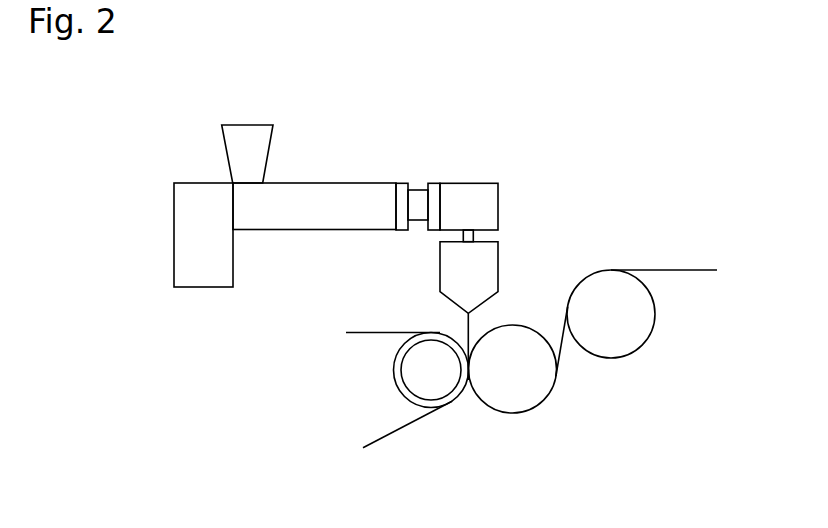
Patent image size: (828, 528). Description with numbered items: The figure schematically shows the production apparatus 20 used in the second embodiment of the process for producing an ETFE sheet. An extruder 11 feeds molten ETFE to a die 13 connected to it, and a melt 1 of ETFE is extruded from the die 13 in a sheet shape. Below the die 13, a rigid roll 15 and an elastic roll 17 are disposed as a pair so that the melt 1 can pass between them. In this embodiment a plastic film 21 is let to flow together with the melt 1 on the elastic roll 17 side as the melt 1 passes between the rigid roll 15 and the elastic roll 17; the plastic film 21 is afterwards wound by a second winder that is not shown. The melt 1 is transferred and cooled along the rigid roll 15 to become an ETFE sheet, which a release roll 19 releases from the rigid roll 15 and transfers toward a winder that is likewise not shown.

The production apparatus 20 is at (591, 132).
The extruder 11 is at (336, 181).
The die 13 is at (498, 258).
The melt 1 is at (463, 325).
The elastic roll 17 is at (420, 382).
The rigid roll 15 is at (532, 388).
The release roll 19 is at (630, 330).
The plastic film 21 is at (336, 300).